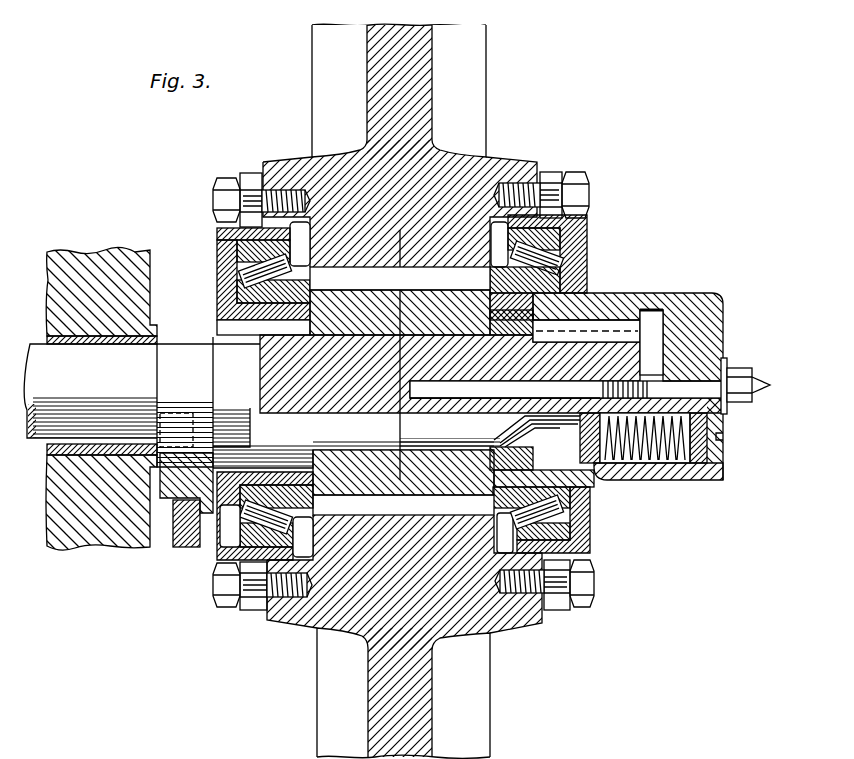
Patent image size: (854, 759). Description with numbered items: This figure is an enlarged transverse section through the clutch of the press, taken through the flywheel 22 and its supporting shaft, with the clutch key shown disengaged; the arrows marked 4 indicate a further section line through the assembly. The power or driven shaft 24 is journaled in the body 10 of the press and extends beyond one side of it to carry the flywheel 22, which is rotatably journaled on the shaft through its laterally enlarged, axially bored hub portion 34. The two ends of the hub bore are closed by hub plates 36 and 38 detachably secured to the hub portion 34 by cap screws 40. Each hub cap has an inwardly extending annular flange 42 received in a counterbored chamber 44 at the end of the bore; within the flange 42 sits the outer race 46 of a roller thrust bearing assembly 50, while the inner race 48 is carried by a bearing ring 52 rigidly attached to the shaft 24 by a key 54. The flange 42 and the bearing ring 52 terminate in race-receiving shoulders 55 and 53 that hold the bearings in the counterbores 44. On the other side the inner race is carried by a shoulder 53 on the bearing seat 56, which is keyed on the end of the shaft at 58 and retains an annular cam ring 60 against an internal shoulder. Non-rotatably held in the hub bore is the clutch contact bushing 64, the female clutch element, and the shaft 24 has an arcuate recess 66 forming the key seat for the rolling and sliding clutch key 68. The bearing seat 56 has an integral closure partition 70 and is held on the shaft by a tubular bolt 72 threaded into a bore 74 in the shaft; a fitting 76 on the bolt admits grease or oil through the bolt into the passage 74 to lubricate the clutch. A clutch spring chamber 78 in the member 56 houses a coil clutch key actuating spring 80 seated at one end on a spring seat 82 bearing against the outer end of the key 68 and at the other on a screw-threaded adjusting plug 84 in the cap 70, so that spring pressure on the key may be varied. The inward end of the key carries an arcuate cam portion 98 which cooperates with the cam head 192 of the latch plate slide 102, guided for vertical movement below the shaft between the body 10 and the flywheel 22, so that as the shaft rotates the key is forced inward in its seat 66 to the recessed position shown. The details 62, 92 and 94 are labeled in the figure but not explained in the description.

The section line 4- 4 is at (390, 247).
The body 10 is at (105, 264).
The flywheel 22 is at (478, 76).
The power shaft 24 is at (40, 364).
The hub portion 34 is at (497, 163).
The hub plate 36 is at (548, 172).
The hub plate 38 is at (249, 173).
The cap screws 40 is at (213, 196).
The annular flange 42 is at (243, 609).
The counterbored chamber 44 is at (309, 551).
The outer race 46 is at (222, 558).
The inner race 48 is at (575, 263).
The roller thrust bearing assembly 50 is at (570, 249).
The bearing ring 52 is at (225, 311).
The shoulder 53 is at (228, 292).
The key 54 is at (222, 329).
The shoulder 55 is at (228, 253).
The bearing seat 56 is at (566, 296).
The key 58 is at (630, 330).
The annular cam ring 60 is at (493, 492).
The clearance gap 62 is at (347, 272).
The clutch contact bushing 64 is at (331, 322).
The recess 66 is at (346, 409).
The clutch key 68 is at (258, 430).
The closure partition 70 is at (706, 302).
The tubular bolt 72 is at (727, 416).
The bore 74 is at (465, 401).
The fitting 76 is at (753, 379).
The clutch spring chamber 78 is at (648, 482).
The clutch key actuating spring 80 is at (681, 482).
The spring seat 82 is at (598, 484).
The adjusting plug 84 is at (724, 452).
The cam surface 92 is at (546, 462).
The bore 94 is at (513, 412).
The cam portion 98 is at (177, 415).
The latch plate slide 102 is at (177, 547).
The cam head 192 is at (162, 505).